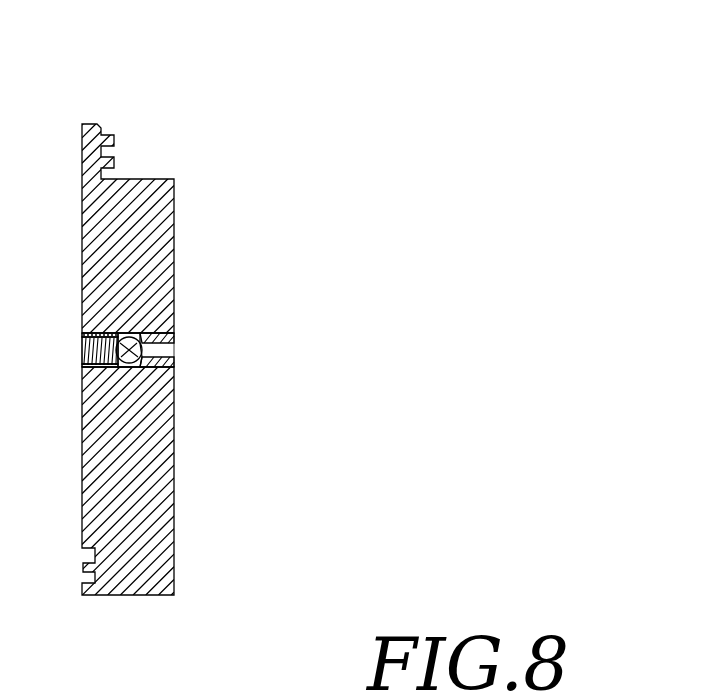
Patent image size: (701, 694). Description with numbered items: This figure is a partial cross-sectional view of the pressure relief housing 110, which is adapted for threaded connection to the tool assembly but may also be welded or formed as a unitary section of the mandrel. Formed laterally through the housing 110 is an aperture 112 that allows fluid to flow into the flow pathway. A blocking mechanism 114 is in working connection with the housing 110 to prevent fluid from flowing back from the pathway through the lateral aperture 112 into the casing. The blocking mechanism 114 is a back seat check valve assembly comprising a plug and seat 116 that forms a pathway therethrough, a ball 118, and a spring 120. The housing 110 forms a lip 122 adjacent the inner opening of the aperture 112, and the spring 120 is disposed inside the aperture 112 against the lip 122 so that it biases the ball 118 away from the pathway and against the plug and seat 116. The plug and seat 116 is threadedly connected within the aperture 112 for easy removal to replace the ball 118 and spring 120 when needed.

The pressure relief housing 110 is at (115, 122).
The aperture 112 is at (185, 353).
The blocking mechanism 114 is at (135, 390).
The plug and seat 116 is at (148, 362).
The ball 118 is at (150, 344).
The spring 120 is at (118, 330).
The lip 122 is at (92, 326).